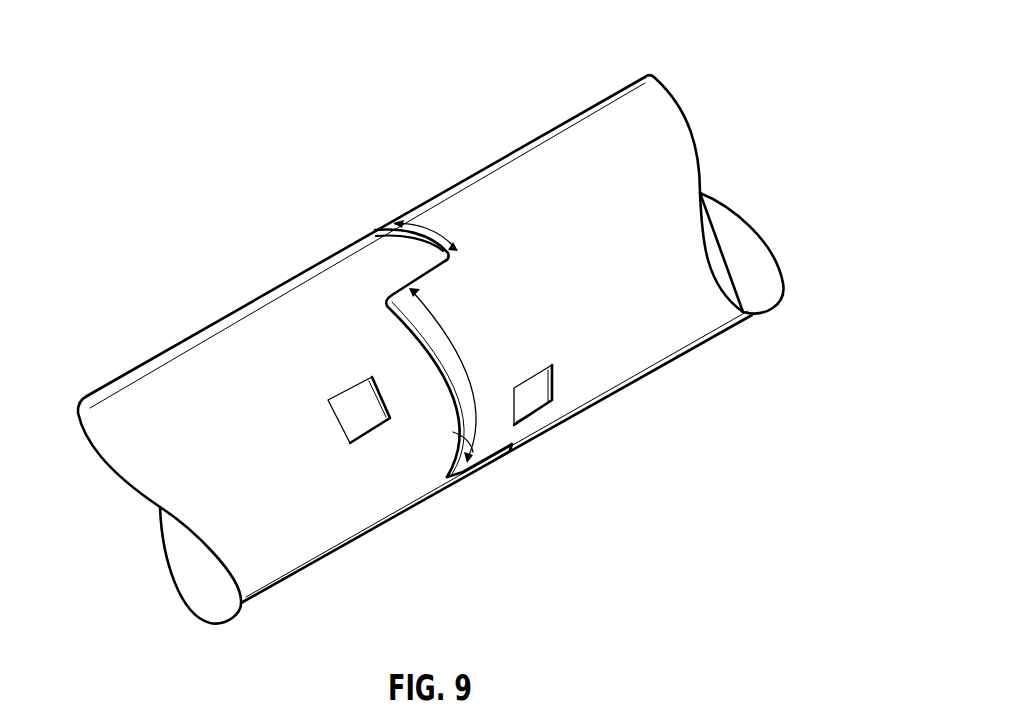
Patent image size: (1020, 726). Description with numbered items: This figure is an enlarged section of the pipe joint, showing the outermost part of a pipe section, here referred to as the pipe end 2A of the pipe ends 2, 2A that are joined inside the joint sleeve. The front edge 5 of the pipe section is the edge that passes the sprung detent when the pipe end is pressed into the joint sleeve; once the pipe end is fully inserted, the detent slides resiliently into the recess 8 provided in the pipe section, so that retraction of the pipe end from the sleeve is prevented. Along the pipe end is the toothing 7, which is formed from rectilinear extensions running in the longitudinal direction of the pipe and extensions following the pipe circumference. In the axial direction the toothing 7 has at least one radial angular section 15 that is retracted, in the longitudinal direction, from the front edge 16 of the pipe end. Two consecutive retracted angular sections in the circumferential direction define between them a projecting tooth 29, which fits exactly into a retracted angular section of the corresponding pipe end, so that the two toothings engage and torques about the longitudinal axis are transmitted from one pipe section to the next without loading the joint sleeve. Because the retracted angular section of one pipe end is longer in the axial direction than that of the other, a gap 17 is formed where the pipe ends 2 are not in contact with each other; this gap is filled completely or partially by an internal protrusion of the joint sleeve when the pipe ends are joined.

The pipe end 2 is at (160, 413).
The pipe end 2A is at (588, 167).
The front edge 5 is at (390, 312).
The toothing 7 is at (415, 278).
The recess 8 is at (367, 407).
The radial angular section 15 is at (430, 234).
The front edge 16 is at (417, 338).
The gap 17 is at (460, 477).
The projecting tooth 29 is at (449, 337).